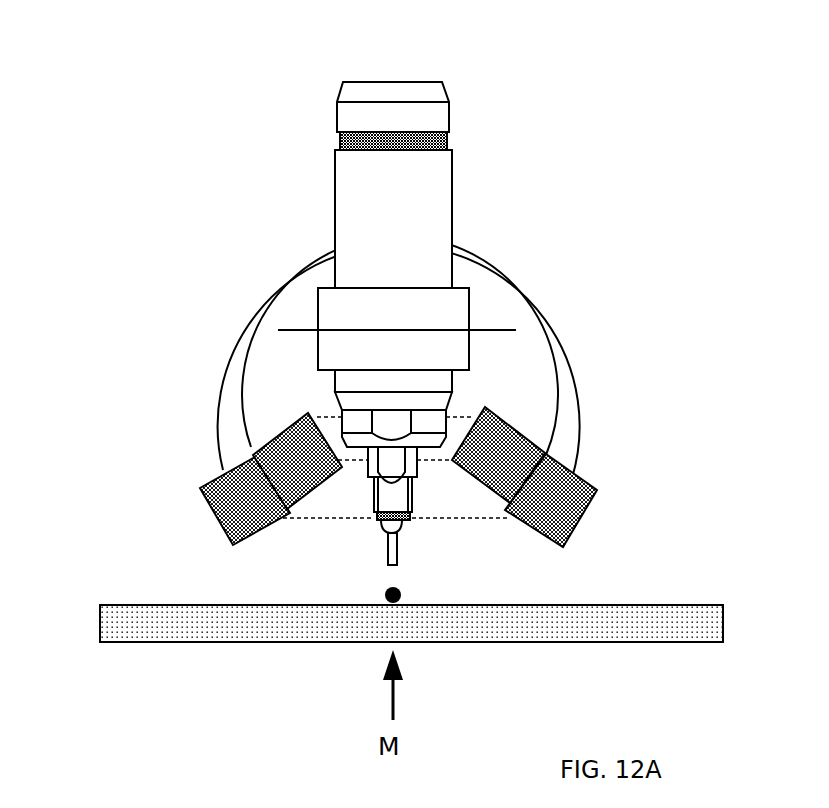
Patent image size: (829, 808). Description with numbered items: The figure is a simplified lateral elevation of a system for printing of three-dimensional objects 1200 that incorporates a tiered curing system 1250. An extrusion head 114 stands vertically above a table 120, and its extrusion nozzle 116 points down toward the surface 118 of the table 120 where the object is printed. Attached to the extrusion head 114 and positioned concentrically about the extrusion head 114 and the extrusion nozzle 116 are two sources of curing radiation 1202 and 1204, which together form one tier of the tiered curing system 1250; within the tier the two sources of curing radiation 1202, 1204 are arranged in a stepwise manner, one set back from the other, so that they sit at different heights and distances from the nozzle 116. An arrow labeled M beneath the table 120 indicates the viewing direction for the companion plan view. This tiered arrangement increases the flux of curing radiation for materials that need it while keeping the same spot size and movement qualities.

The system for printing of 3-D objects 1200 is at (268, 82).
The extrusion head 114 is at (418, 82).
The extrusion nozzle 116 is at (388, 532).
The surface 118 is at (160, 605).
The table 120 is at (697, 642).
The source of curing radiation 1202 is at (223, 472).
The source of curing radiation 1204 is at (281, 430).
The tiered curing system for printing of 3-D objects 1250 is at (168, 320).